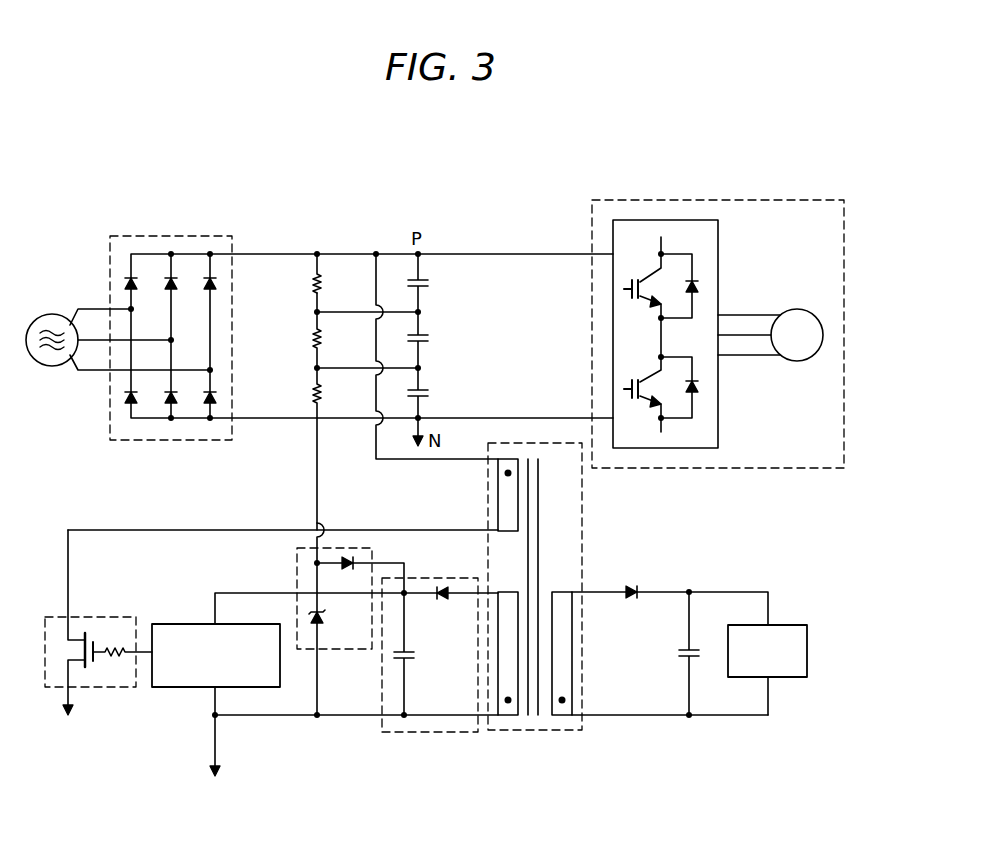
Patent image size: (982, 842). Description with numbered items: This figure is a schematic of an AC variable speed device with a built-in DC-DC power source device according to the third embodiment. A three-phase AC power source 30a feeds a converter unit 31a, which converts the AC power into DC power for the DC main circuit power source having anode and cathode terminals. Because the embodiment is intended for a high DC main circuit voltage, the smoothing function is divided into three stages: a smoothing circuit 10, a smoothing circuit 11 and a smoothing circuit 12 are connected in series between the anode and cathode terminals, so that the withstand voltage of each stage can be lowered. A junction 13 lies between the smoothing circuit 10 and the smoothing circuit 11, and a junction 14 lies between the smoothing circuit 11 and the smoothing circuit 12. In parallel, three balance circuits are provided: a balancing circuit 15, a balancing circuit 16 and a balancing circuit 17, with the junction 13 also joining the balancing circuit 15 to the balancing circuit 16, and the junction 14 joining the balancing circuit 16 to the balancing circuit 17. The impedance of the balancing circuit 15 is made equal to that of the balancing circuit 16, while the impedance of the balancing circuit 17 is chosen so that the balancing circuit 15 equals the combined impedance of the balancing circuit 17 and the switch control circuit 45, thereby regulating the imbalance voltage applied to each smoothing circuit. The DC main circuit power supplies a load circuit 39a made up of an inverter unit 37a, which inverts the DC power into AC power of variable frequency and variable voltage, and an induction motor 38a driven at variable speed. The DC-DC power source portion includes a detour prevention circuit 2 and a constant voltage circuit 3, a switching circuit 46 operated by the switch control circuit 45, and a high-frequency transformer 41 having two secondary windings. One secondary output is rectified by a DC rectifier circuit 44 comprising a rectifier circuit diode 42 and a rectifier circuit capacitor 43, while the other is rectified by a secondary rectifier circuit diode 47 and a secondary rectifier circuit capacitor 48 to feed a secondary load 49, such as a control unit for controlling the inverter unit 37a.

The three-phase AC power source 30a is at (45, 314).
The converter unit 31a is at (110, 250).
The smoothing circuit 10 is at (432, 284).
The smoothing circuit 11 is at (432, 341).
The smoothing circuit 12 is at (432, 398).
The junction 13 is at (312, 314).
The junction 14 is at (312, 370).
The balancing circuit 15 is at (312, 284).
The balancing circuit 16 is at (312, 340).
The balancing circuit 17 is at (312, 396).
The inverter unit 37a is at (713, 262).
The induction motor 38a is at (800, 362).
The load circuit 39a is at (718, 300).
The high-frequency transformer 41 is at (583, 528).
The detour prevention circuit 2 is at (350, 555).
The constant voltage circuit 3 is at (323, 615).
The rectifier circuit diode 42 is at (442, 600).
The rectifier circuit capacitor 43 is at (413, 655).
The DC rectifier circuit 44 is at (440, 691).
The switch control circuit 45 is at (163, 687).
The switching circuit 46 is at (45, 668).
The secondary rectifier circuit diode 47 is at (632, 600).
The secondary rectifier circuit capacitor 48 is at (678, 655).
The secondary load 49 is at (810, 648).